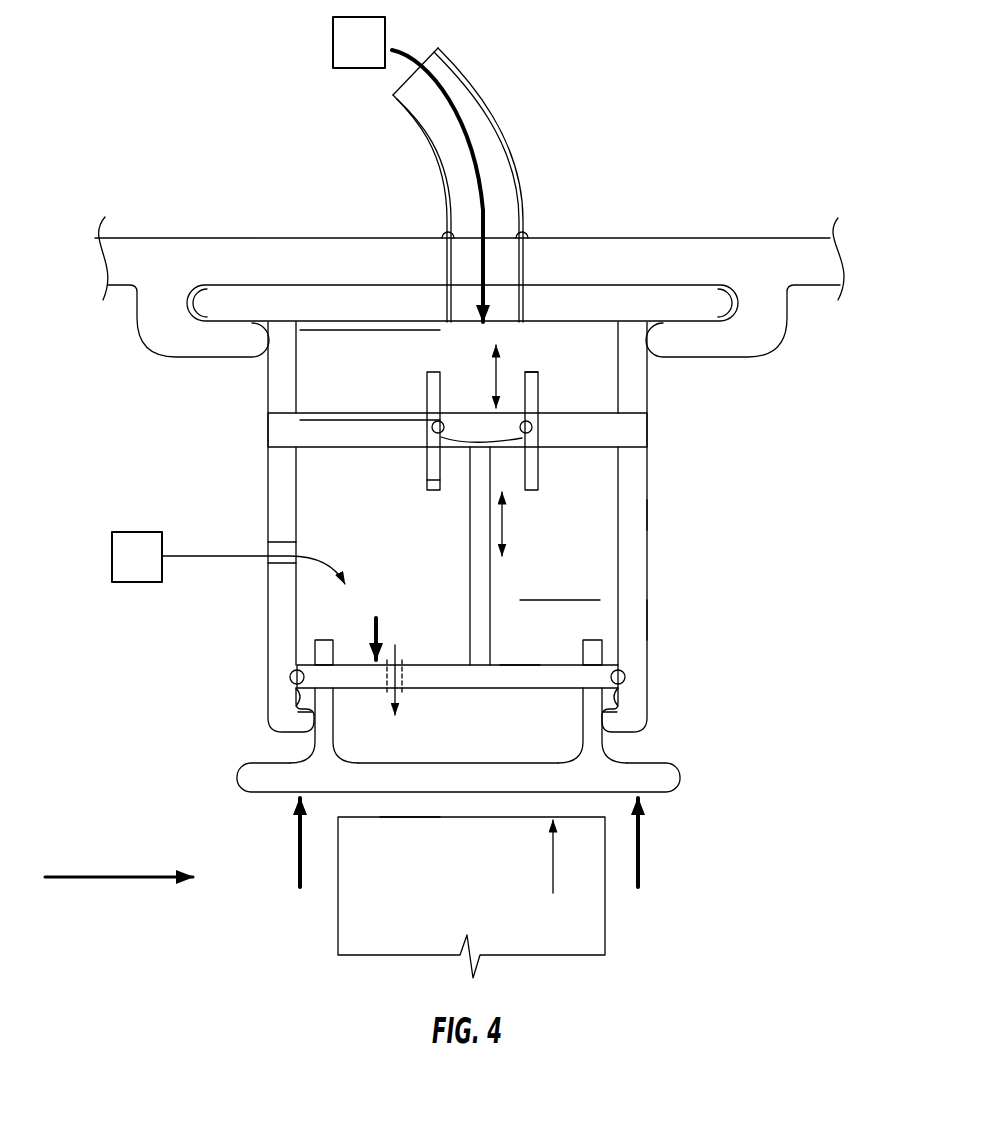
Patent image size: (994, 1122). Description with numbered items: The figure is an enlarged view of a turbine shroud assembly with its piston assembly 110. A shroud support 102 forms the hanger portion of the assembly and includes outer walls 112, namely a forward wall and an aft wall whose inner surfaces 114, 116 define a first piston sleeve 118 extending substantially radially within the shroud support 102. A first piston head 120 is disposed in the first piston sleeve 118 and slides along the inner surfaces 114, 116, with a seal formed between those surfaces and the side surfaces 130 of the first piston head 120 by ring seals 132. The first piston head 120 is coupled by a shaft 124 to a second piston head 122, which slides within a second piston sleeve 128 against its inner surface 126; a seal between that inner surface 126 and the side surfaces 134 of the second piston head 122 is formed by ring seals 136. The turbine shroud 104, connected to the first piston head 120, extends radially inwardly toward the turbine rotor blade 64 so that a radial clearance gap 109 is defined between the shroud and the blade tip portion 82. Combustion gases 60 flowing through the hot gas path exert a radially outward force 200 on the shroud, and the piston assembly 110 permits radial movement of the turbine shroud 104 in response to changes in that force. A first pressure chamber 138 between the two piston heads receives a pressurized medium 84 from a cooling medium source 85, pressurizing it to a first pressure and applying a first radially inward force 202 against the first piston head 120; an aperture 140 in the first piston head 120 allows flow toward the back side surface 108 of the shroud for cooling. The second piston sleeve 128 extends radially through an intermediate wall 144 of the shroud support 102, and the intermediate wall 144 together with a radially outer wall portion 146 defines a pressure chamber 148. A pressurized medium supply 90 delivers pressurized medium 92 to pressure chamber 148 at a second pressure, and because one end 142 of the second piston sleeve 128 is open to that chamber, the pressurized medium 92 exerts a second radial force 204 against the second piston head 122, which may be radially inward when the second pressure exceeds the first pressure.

The combustion gases 60 is at (99, 875).
The turbine rotor blade 64 is at (485, 892).
The blade tip portion 82 is at (556, 872).
The pressurized medium 84 is at (237, 557).
The cooling medium source 85 is at (150, 569).
The pressurized medium supply 90 is at (372, 60).
The pressurized medium 92 is at (460, 115).
The shroud support 102 is at (672, 644).
The turbine shroud 104 is at (255, 780).
The back side surface 108 is at (437, 761).
The radial clearance gap 109 is at (398, 800).
The piston assembly 110 is at (506, 606).
The outer wall 112 is at (266, 430).
The inner surface of the forward wall 114 is at (297, 610).
The inner surface of the aft wall 116 is at (616, 592).
The first piston sleeve 118 is at (625, 479).
The first piston head 120 is at (517, 672).
The second piston head 122 is at (461, 440).
The shaft 124 is at (470, 553).
The inner surface of the second piston sleeve 126 is at (440, 370).
The second piston sleeve 128 is at (540, 385).
The side surfaces of the first piston head 130 is at (300, 705).
The ring seals 132 is at (289, 677).
The side surfaces of the second piston head 134 is at (522, 438).
The ring seals 136 is at (431, 427).
The first pressure chamber 138 is at (595, 534).
The aperture 140 is at (405, 677).
The open end 142 is at (533, 370).
The intermediate wall 144 is at (330, 432).
The radially outer wall portion 146 is at (342, 300).
The pressure chamber 148 is at (372, 358).
The radially outward force 200 is at (298, 857).
The first radially inward force 202 is at (397, 625).
The second radial force 204 is at (498, 380).